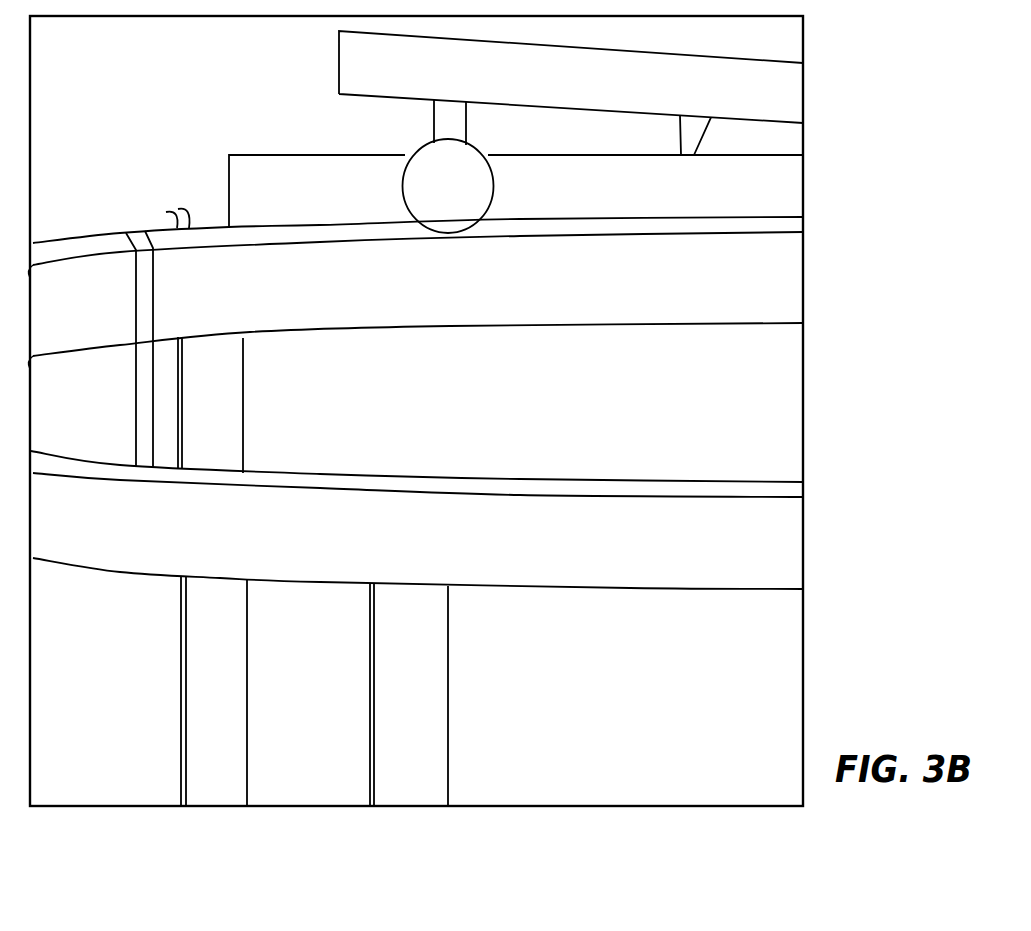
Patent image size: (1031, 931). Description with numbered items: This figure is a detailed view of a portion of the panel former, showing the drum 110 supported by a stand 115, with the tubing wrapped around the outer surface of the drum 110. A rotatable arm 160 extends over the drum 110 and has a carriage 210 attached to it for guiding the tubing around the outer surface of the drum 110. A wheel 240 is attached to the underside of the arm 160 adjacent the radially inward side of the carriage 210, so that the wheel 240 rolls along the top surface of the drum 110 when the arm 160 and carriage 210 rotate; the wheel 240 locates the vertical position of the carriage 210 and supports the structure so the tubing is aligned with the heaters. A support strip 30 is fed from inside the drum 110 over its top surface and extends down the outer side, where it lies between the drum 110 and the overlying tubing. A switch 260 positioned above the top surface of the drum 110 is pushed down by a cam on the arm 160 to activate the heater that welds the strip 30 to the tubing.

The support strip 30 is at (138, 401).
The drum 110 is at (771, 295).
The stand 115 is at (402, 641).
The arm 160 is at (771, 76).
The carriage 210 is at (278, 188).
The wheel 240 is at (448, 153).
The switch 260 is at (175, 201).